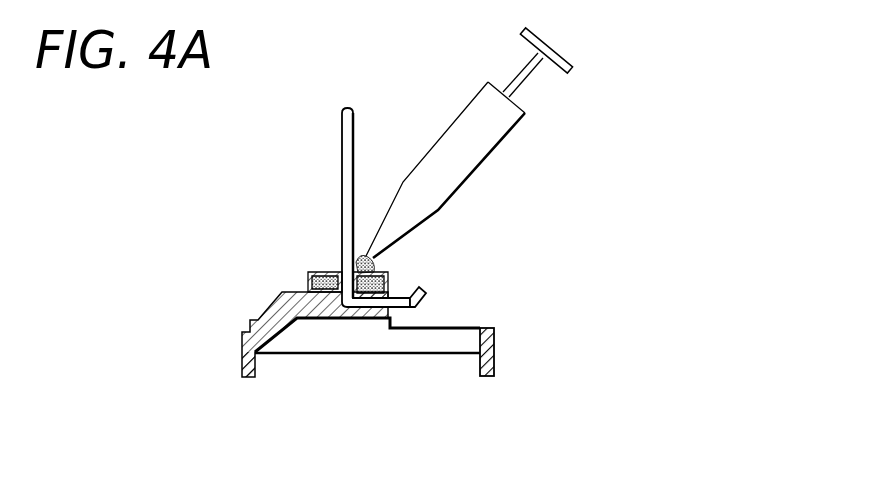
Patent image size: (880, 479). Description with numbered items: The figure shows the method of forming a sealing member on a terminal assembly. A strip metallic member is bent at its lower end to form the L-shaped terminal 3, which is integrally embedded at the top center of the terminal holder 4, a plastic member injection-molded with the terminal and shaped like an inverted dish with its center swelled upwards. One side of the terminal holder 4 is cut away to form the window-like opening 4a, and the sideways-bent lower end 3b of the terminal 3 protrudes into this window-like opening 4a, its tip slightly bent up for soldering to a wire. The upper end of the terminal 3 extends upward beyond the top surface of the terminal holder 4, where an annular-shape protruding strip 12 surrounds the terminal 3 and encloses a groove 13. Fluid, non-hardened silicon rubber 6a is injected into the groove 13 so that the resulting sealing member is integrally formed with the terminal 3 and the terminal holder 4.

The terminal 3 is at (347, 120).
The lower end of the terminal 3b is at (415, 300).
The terminal holder 4 is at (270, 313).
The window-like opening 4a is at (481, 336).
The silicon rubber 6a is at (358, 262).
The annular-shape protruding strip 12 is at (383, 270).
The groove 13 is at (328, 272).